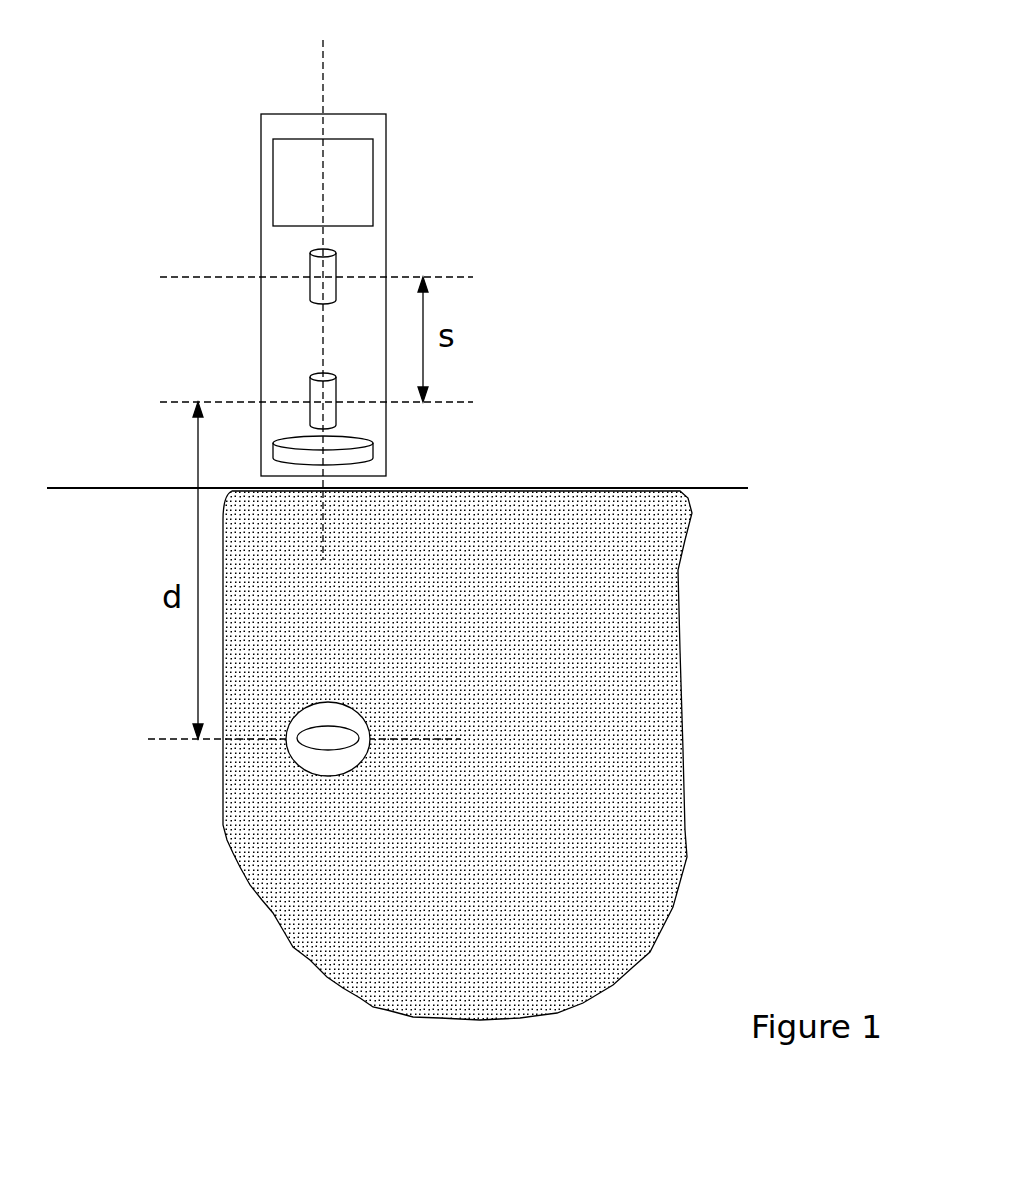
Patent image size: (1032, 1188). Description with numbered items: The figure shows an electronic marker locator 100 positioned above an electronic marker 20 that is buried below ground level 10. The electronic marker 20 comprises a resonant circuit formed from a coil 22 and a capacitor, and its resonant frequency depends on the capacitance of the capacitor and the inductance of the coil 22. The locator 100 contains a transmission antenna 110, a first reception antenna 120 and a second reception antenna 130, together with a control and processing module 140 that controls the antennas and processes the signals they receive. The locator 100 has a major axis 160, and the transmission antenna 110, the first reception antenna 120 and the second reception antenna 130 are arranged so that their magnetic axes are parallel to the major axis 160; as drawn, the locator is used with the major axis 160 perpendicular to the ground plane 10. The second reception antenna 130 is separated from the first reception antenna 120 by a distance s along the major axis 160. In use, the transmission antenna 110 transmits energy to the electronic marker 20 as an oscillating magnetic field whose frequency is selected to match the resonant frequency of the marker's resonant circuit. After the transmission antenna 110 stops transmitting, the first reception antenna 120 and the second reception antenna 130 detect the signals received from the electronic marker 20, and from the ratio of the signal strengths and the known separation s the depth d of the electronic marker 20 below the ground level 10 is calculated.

The ground level 10 is at (598, 488).
The electronic marker 20 is at (297, 765).
The coil 22 is at (335, 750).
The electronic marker locator 100 is at (386, 127).
The transmission antenna 110 is at (348, 452).
The first reception antenna 120 is at (310, 402).
The second reception antenna 130 is at (338, 270).
The control and processing module 140 is at (373, 187).
The major axis 160 is at (325, 62).